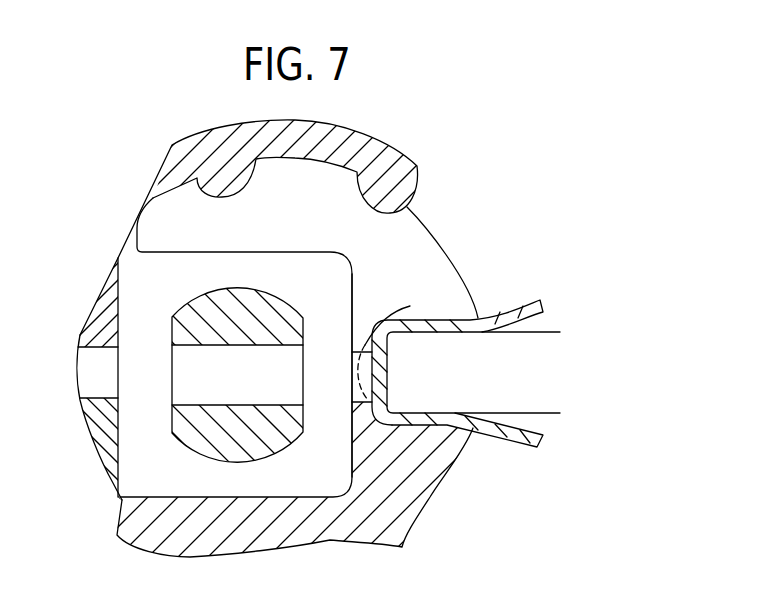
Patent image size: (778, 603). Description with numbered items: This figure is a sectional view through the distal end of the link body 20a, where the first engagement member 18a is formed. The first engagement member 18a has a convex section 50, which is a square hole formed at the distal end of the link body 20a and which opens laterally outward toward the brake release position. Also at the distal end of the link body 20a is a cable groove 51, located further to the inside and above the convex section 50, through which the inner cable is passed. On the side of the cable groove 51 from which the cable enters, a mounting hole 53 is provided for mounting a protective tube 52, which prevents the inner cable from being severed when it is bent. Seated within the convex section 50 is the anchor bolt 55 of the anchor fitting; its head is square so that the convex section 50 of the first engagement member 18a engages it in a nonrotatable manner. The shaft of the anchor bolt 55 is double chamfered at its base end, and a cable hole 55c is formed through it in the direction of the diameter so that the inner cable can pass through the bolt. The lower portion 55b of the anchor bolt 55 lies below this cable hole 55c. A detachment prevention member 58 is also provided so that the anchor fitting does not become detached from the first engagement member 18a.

The detachment prevention member 58 is at (392, 139).
The first engagement member 18a is at (320, 295).
The convex section 50 is at (352, 304).
The cable groove 51 is at (410, 306).
The protective tube 52 is at (538, 298).
The mounting hole 53 is at (445, 414).
The anchor bolt 55 is at (170, 294).
The lower ring portion 55b is at (205, 422).
The cable hole 55c is at (220, 404).
The link body 20a is at (432, 497).